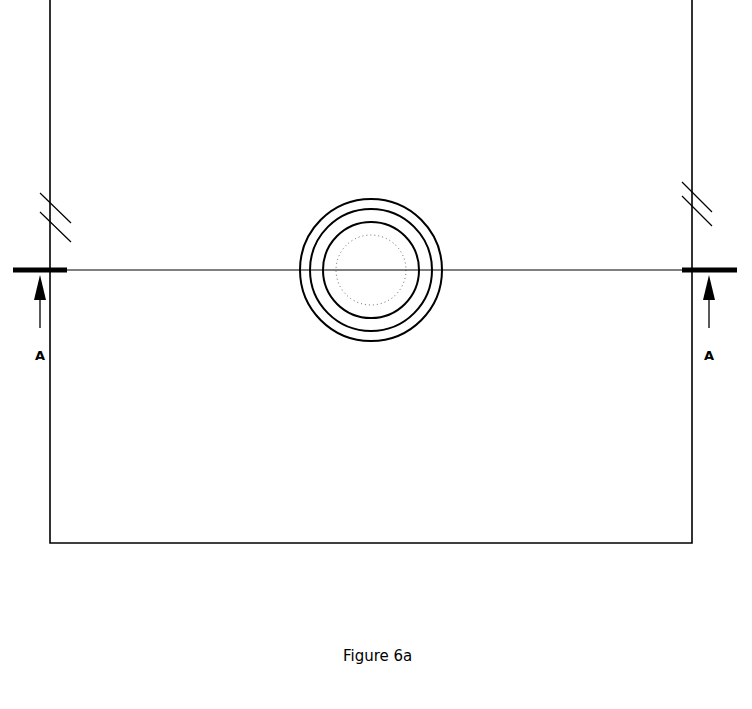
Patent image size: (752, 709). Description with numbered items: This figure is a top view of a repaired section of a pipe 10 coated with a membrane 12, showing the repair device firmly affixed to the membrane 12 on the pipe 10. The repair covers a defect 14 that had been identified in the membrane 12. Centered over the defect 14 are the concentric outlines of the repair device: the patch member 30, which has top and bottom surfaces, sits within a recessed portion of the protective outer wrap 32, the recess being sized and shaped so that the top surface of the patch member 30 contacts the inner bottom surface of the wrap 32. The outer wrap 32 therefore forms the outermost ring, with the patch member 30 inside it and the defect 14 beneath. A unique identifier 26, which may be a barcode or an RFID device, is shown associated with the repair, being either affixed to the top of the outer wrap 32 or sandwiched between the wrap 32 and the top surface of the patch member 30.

The pipe 10 is at (133, 543).
The membrane 12 is at (547, 365).
The defect 14 is at (373, 275).
The unique identifier 26 is at (359, 287).
The patch member 30 is at (408, 287).
The protective outer wrap 32 is at (312, 310).